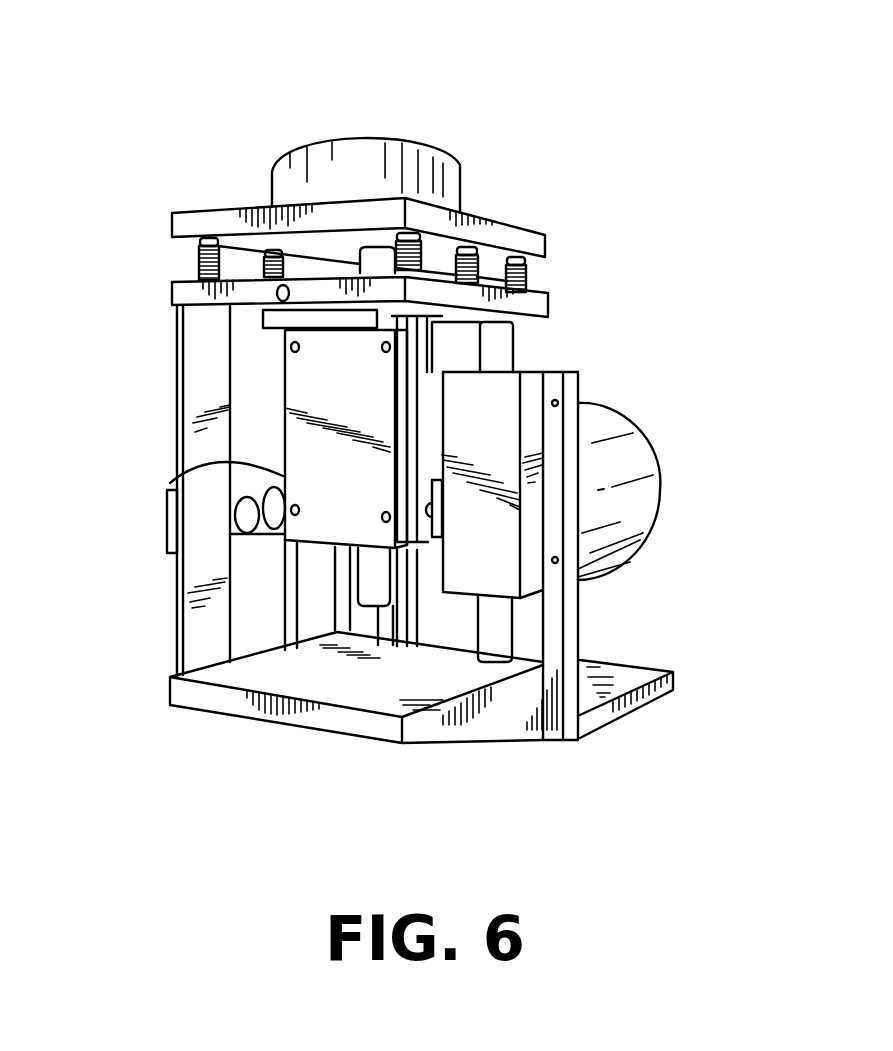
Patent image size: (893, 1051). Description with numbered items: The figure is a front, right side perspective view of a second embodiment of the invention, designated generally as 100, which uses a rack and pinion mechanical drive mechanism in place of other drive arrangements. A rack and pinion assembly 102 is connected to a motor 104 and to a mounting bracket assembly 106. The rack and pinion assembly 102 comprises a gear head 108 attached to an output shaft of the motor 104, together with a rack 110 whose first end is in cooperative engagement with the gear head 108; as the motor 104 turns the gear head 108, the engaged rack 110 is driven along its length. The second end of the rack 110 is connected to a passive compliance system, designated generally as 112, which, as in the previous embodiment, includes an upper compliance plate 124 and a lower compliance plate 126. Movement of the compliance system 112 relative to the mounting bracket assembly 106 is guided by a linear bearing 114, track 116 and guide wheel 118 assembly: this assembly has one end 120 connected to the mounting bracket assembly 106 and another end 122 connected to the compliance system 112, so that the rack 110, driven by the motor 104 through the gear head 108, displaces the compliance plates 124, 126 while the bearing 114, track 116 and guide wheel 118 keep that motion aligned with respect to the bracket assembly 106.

The second embodiment 100 is at (427, 97).
The rack and pinion assembly 102 is at (548, 363).
The motor 104 is at (653, 462).
The mounting bracket assembly 106 is at (580, 636).
The gear head 108 is at (435, 528).
The rack 110 is at (388, 637).
The passive compliance system 112 is at (156, 210).
The linear bearing 114 is at (513, 342).
The track 116 is at (175, 405).
The guide wheel 118 is at (283, 477).
The end 120 is at (558, 525).
The end 122 is at (190, 312).
The upper compliance plate 124 is at (175, 237).
The lower compliance plate 126 is at (170, 298).